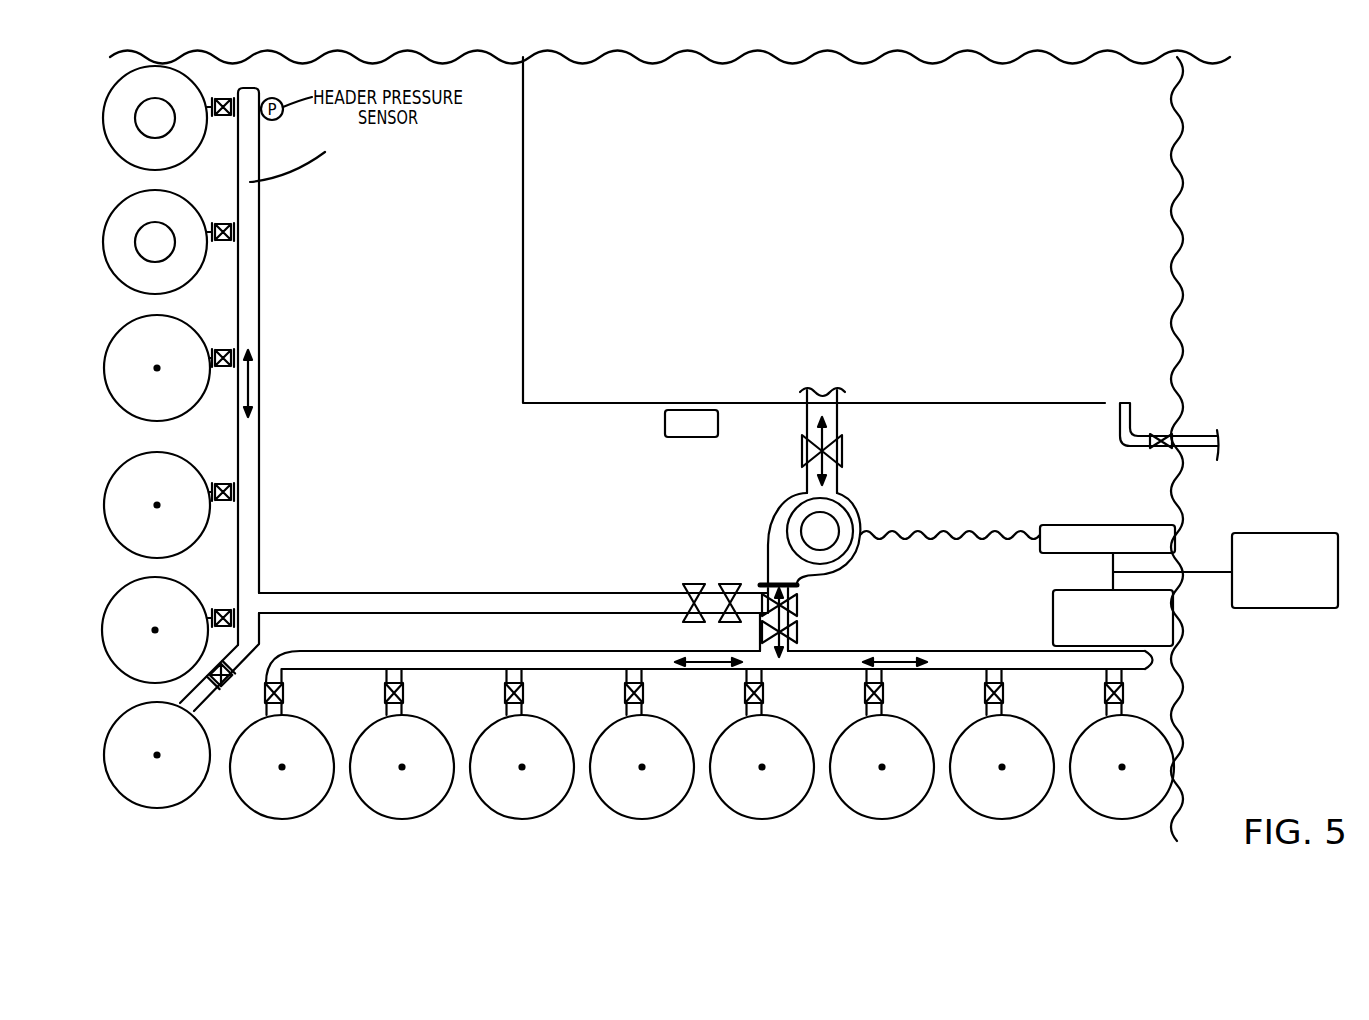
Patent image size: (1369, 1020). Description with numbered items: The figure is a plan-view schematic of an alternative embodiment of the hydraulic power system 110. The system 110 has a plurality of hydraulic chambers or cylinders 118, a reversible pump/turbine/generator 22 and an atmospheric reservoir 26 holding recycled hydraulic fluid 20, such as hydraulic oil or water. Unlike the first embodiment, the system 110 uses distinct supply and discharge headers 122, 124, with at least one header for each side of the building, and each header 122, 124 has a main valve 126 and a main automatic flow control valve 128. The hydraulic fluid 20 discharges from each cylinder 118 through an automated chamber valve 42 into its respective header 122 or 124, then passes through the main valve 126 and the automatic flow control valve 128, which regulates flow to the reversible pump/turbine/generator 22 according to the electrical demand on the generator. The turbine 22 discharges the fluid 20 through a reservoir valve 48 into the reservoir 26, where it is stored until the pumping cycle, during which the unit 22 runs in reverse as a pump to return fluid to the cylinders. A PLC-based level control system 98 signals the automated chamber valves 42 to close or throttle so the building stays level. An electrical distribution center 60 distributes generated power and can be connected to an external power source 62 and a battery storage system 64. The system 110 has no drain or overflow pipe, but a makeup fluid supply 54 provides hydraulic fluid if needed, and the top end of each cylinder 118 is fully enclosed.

The hydraulic fluid 20 is at (745, 202).
The reservoir 26 is at (868, 147).
The automated chamber valve 42 is at (235, 232).
The reservoir valve 48 is at (843, 443).
The makeup fluid supply 54 is at (1193, 437).
The reversible pump/turbine/generator 22 is at (860, 518).
The electrical distribution center 60 is at (1177, 535).
The external power source 62 is at (1288, 610).
The battery storage system 64 is at (1173, 637).
The PLC-based level control system 98 is at (692, 442).
The supply and discharge header 124 is at (253, 457).
The main valve 126 is at (690, 583).
The main automatic flow control valve 128 is at (731, 583).
The supply and discharge header 122 is at (705, 667).
The hydraulic chamber or cylinder 118 is at (428, 817).
The hydraulic power system 110 is at (702, 764).